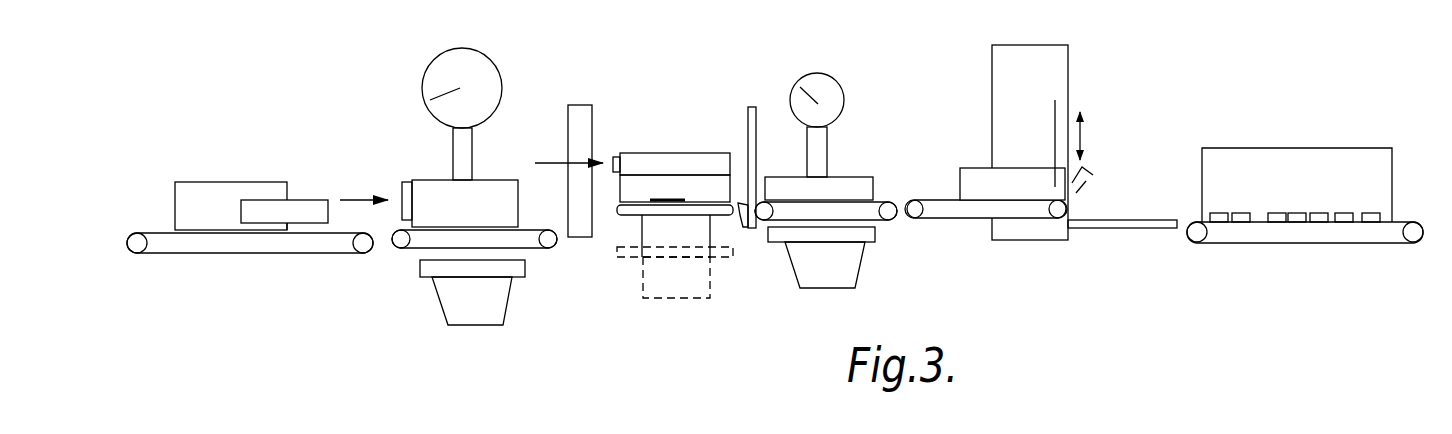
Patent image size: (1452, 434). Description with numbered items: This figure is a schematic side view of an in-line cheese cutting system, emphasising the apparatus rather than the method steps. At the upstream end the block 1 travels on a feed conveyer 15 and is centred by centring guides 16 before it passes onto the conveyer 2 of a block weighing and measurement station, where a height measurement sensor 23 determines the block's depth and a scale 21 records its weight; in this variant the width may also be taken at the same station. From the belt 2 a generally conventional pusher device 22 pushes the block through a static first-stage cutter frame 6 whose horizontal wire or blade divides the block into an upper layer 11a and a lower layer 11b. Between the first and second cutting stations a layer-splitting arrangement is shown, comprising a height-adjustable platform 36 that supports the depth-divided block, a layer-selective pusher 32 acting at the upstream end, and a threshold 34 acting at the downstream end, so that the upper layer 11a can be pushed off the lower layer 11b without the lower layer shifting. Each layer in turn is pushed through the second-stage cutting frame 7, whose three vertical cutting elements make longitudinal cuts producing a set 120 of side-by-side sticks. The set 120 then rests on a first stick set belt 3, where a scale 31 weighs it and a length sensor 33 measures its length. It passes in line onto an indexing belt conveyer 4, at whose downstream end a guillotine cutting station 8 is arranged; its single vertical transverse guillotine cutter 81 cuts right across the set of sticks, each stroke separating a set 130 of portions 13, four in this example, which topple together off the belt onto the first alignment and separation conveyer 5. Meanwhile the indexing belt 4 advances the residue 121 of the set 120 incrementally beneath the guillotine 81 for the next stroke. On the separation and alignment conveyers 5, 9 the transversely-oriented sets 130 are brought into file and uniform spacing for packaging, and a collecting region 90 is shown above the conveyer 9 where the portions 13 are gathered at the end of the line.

The block 1 is at (190, 190).
The centring guides 16 is at (308, 208).
The feed conveyer 15 is at (270, 255).
The conveyer 2 is at (418, 252).
The pusher device 22 is at (402, 188).
The height measurement sensor 23 is at (430, 86).
The scale 21 is at (455, 305).
The first-stage cutter frame 6 is at (567, 105).
The pusher 32 is at (606, 140).
The upper layer 11a is at (661, 160).
The lower layer 11b is at (675, 188).
The height-adjustable platform 36 is at (645, 281).
The second-stage cutting frame 7 is at (746, 105).
The threshold 34 is at (740, 230).
The first stick set belt 3 is at (890, 222).
The length sensor 33 is at (825, 90).
The set of sticks 120 is at (852, 163).
The scale 31 is at (835, 270).
The guillotine cutting station 8 is at (1000, 80).
The indexing belt conveyer 4 is at (978, 222).
The residue of the set of sticks 121 is at (957, 160).
The transverse guillotine cutter 81 is at (1053, 125).
The set of portions 130 is at (1100, 153).
The first alignment and separation conveyer 5 is at (1133, 230).
The element 90 is at (1263, 136).
The separation and alignment conveyer 9 is at (1290, 246).
The portions 13 is at (1372, 211).